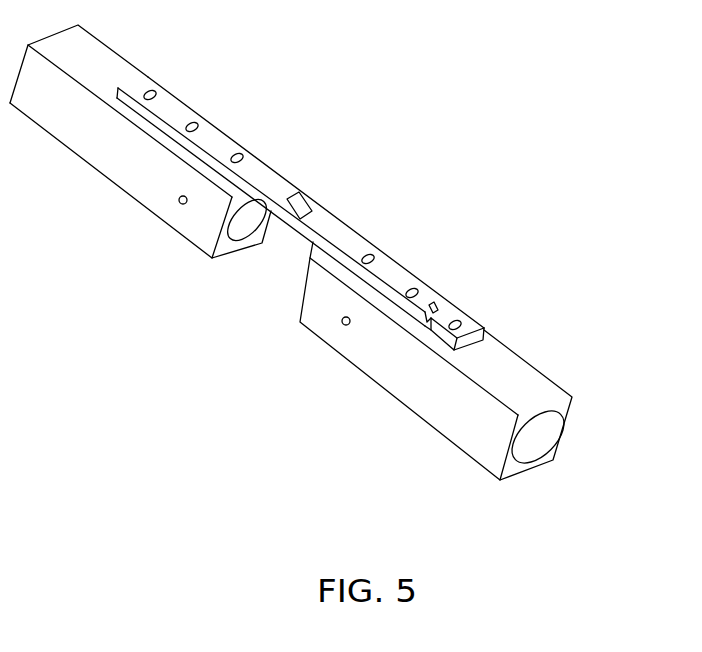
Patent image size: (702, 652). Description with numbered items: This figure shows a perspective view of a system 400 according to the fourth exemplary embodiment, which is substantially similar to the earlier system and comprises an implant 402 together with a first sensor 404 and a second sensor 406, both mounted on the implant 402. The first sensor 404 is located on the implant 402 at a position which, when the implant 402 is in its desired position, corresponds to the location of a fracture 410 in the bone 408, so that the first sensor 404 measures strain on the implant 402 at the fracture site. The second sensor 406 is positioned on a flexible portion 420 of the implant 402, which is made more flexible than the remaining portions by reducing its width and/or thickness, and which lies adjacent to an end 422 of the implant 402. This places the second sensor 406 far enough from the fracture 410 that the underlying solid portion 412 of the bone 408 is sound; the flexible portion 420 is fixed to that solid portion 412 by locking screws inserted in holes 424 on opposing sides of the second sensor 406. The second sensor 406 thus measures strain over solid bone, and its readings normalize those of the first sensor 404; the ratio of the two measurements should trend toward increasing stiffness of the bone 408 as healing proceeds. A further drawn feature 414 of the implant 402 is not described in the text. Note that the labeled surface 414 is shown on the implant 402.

The system 400 is at (421, 138).
The implant 402 is at (307, 257).
The first sensor 404 is at (302, 200).
The second sensor 406 is at (437, 300).
The bone 408 is at (138, 180).
The fracture 410 is at (277, 258).
The solid portion of the bone 412 is at (418, 377).
The top surface of bar 414 is at (330, 227).
The flexible portion 420 is at (400, 330).
The end of the implant 422 is at (485, 330).
The holes 424 is at (417, 292).